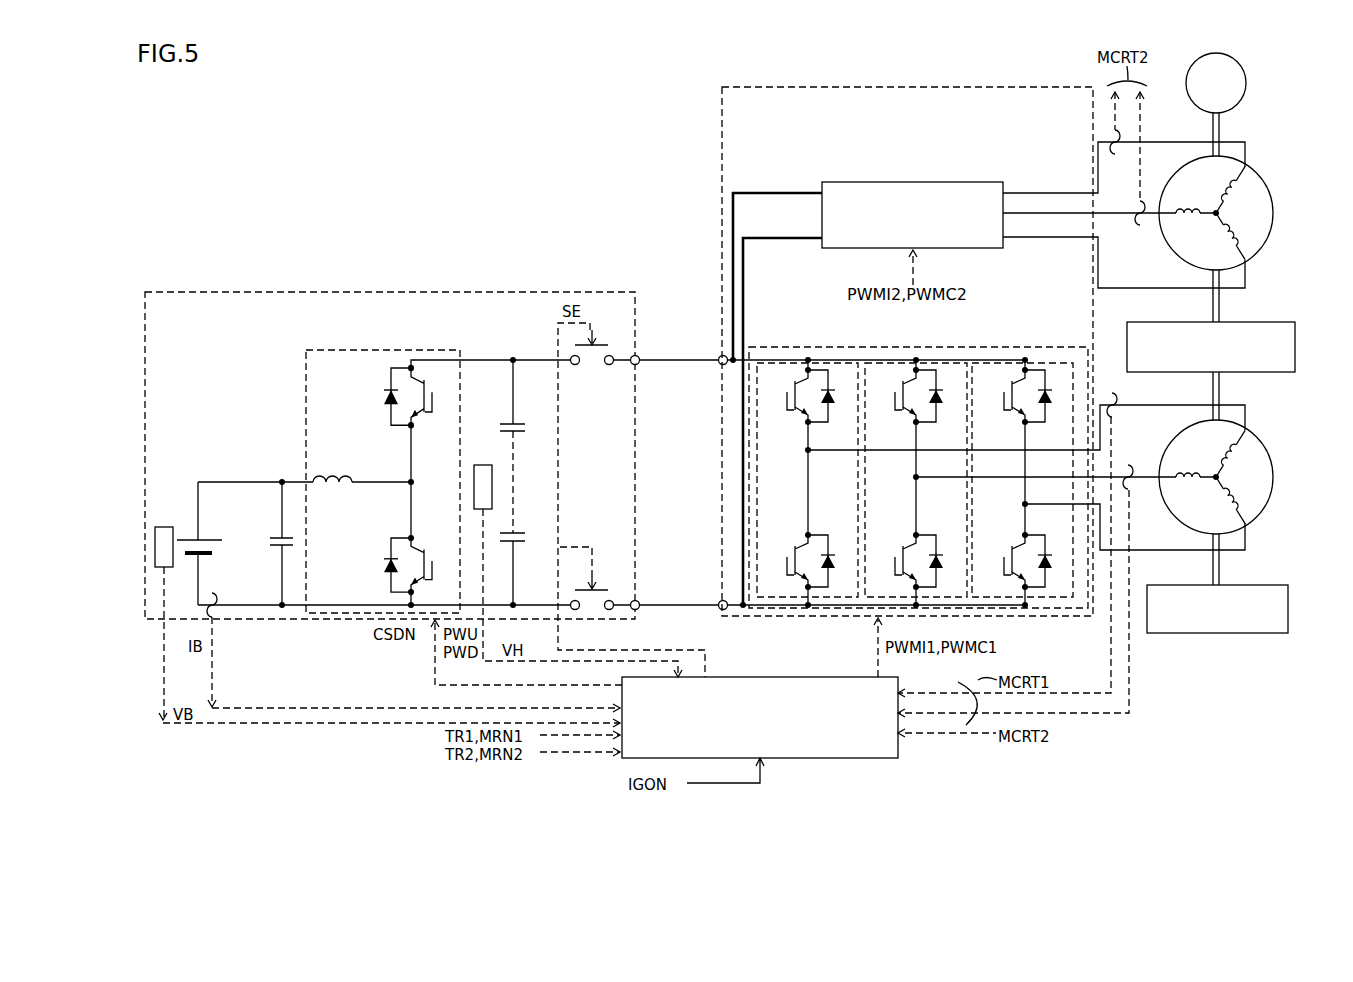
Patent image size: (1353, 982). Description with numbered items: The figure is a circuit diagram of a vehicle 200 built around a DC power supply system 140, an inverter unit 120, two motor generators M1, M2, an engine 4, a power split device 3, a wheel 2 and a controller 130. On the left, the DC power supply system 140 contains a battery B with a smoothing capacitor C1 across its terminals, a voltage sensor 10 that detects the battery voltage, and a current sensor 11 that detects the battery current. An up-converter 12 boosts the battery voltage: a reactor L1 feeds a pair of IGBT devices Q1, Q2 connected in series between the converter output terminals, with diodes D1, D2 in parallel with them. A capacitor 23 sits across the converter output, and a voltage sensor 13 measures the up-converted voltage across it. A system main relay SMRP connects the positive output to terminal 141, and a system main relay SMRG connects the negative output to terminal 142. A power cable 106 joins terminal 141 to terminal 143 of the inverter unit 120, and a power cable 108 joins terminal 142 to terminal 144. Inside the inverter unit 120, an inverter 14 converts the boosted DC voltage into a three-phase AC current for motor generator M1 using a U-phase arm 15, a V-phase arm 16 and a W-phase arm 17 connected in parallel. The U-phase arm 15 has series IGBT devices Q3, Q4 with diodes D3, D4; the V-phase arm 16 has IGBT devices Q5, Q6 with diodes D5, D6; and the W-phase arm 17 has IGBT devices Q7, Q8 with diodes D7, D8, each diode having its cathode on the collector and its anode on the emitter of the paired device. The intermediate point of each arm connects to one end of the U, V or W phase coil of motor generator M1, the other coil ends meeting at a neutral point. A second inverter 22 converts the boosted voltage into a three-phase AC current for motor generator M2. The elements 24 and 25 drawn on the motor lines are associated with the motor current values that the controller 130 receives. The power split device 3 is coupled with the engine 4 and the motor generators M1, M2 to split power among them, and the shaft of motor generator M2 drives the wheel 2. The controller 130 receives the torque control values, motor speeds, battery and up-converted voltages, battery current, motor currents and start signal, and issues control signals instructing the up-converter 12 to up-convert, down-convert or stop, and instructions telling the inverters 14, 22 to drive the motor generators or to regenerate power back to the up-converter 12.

The vehicle 200 is at (203, 283).
The DC power supply system 140 is at (289, 292).
The up-converter 12 is at (306, 378).
The voltage sensor 10 is at (163, 527).
The current sensor 11 is at (213, 593).
The voltage sensor 13 is at (483, 465).
The capacitor 23 is at (520, 447).
The power cable 106 is at (678, 357).
The power cable 108 is at (675, 608).
The terminal 141 is at (638, 365).
The terminal 142 is at (638, 600).
The terminal 143 is at (720, 365).
The terminal 144 is at (720, 600).
The inverter unit 120 is at (770, 87).
The inverter 14 is at (777, 347).
The U-phase arm 15 is at (842, 363).
The V-phase arm 16 is at (948, 363).
The W-phase arm 17 is at (1055, 363).
The inverter 22 is at (970, 182).
The current sensor 24 is at (1111, 393).
The current sensor 25 is at (1115, 155).
The wheel 2 is at (1247, 82).
The power split device 3 is at (1260, 322).
The engine 4 is at (1263, 583).
The controller 130 is at (848, 760).
The battery B is at (185, 538).
The smoothing capacitor C1 is at (280, 546).
The reactor L1 is at (332, 469).
The IGBT device Q1 is at (431, 397).
The IGBT device Q2 is at (431, 565).
The IGBT device Q3 is at (787, 396).
The IGBT device Q4 is at (787, 561).
The IGBT device Q5 is at (894, 396).
The IGBT device Q6 is at (894, 561).
The IGBT device Q7 is at (1003, 396).
The IGBT device Q8 is at (1003, 561).
The diode D1 is at (383, 396).
The diode D2 is at (383, 565).
The diode D3 is at (830, 401).
The diode D4 is at (830, 565).
The diode D5 is at (937, 401).
The diode D6 is at (937, 565).
The diode D7 is at (1047, 401).
The diode D8 is at (1047, 565).
The motor generator M1 is at (1257, 428).
The motor generator M2 is at (1257, 167).
The system main relay SMRP is at (595, 366).
The system main relay SMRG is at (592, 610).